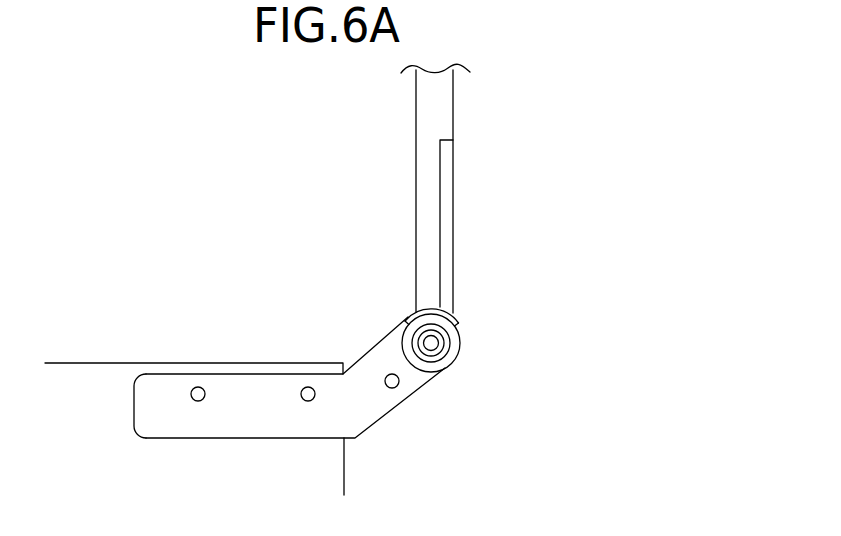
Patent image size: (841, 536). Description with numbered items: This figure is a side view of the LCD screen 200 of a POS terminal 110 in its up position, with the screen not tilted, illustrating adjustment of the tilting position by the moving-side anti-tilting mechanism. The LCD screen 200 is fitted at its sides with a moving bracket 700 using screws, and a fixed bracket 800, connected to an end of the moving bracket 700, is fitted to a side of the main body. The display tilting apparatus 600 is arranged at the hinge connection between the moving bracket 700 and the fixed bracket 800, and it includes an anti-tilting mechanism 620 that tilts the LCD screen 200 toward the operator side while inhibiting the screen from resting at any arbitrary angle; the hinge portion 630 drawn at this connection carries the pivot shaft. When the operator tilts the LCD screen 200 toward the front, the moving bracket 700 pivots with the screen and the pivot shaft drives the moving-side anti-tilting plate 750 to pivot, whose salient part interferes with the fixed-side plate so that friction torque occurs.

The POS terminal 110 is at (131, 363).
The LCD screen 200 is at (415, 113).
The display tilting apparatus 600 is at (453, 319).
The anti-tilting mechanism 620 is at (463, 341).
The cap band 630 is at (458, 320).
The moving bracket 700 is at (450, 198).
The moving-side anti-tilting plate 750 is at (440, 352).
The fixed bracket 800 is at (215, 428).